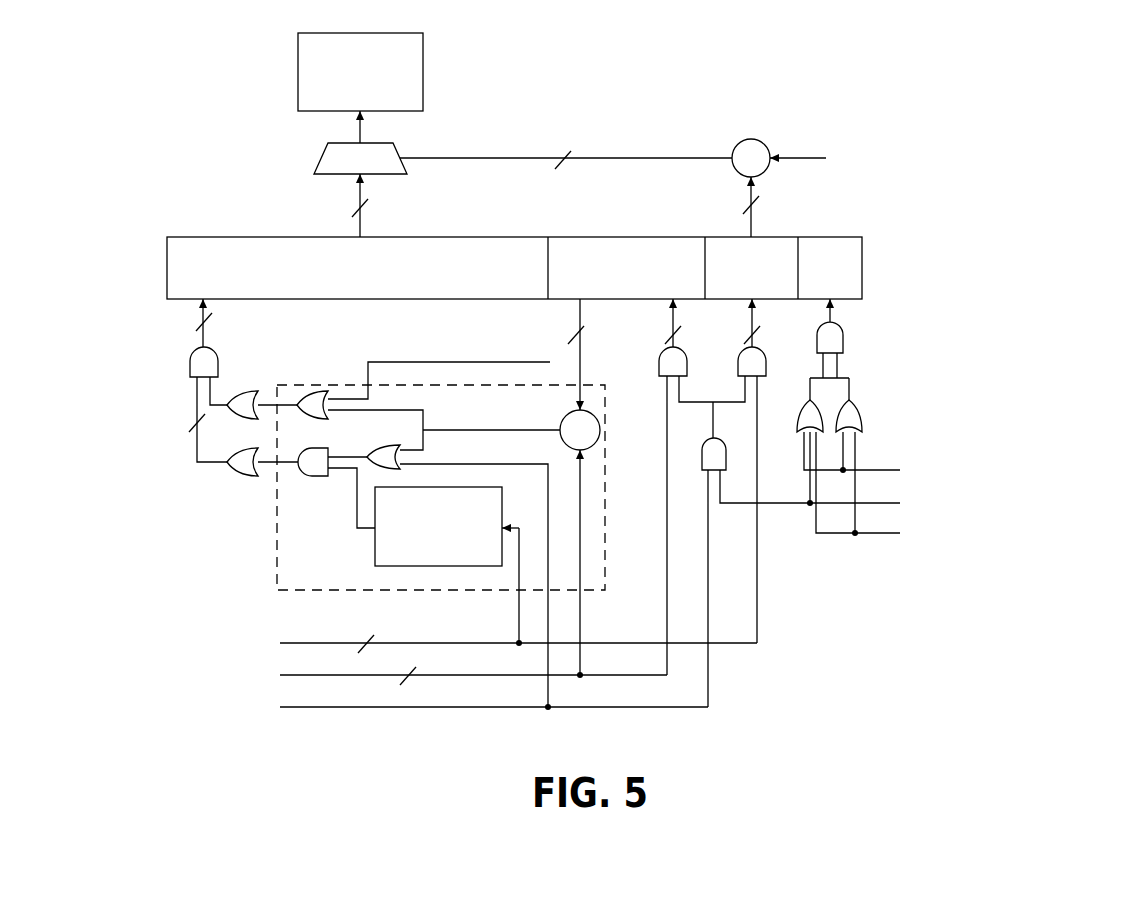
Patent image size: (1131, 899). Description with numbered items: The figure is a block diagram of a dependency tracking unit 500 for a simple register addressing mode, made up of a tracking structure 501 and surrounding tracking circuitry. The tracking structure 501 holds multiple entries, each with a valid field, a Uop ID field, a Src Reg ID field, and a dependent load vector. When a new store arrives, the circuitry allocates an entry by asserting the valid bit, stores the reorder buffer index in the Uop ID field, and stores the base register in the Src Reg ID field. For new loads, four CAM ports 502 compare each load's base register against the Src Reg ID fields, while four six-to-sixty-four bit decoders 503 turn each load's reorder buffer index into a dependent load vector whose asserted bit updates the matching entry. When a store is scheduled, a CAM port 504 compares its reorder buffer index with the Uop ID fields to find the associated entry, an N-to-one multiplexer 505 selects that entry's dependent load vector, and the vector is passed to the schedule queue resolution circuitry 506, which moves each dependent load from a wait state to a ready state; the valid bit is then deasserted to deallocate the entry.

The dependency tracking unit 500 is at (226, 154).
The tracking structure 501 is at (167, 237).
The CAM port 502 is at (562, 421).
The 6-to-64 bit decoder 503 is at (403, 566).
The CAM port 504 is at (735, 146).
The N:1 multiplexer 505 is at (322, 160).
The schedule queue (SQ) resolution circuitry 506 is at (298, 65).